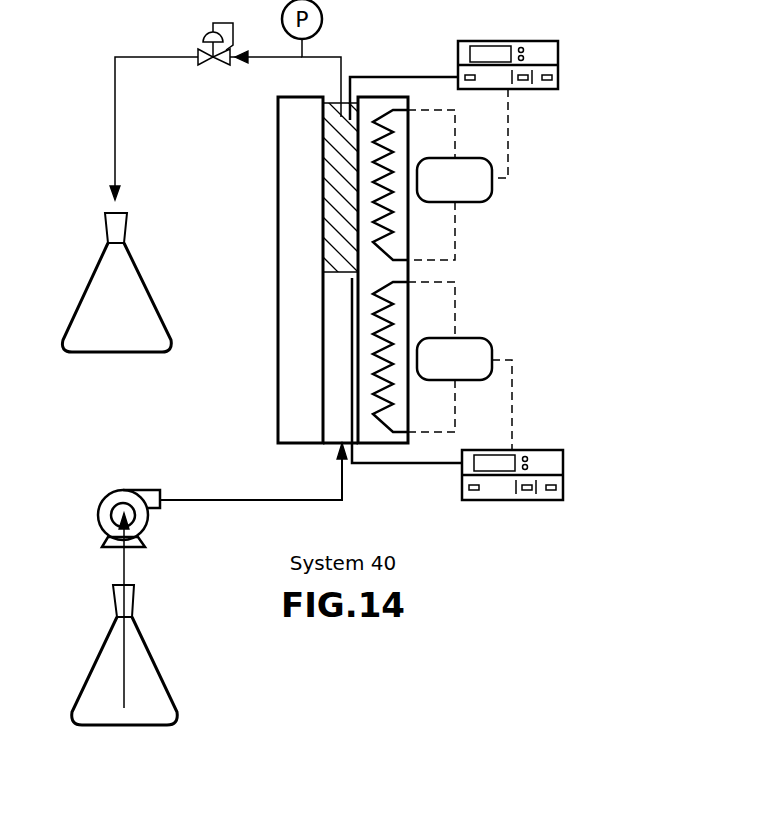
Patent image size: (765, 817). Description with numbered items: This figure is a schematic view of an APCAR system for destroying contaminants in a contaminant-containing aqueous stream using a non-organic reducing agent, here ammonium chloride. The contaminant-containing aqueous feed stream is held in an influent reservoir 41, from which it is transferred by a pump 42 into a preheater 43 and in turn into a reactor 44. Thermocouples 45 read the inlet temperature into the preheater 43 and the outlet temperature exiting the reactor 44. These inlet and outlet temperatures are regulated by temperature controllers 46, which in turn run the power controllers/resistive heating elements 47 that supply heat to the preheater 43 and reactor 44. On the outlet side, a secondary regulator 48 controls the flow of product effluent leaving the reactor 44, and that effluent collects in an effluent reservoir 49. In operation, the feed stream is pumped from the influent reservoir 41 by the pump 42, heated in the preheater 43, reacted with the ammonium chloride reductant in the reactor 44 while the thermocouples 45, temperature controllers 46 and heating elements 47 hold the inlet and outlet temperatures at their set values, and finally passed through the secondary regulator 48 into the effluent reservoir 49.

The influent reservoir 41 is at (153, 660).
The pump 42 is at (121, 489).
The preheater 43 is at (292, 369).
The reactor 44 is at (292, 182).
The thermocouples 45 is at (400, 76).
The temperature controllers 46 is at (558, 52).
The power controllers/resistive heating elements 47 is at (492, 200).
The secondary regulator 48 is at (220, 66).
The effluent reservoir 49 is at (148, 287).